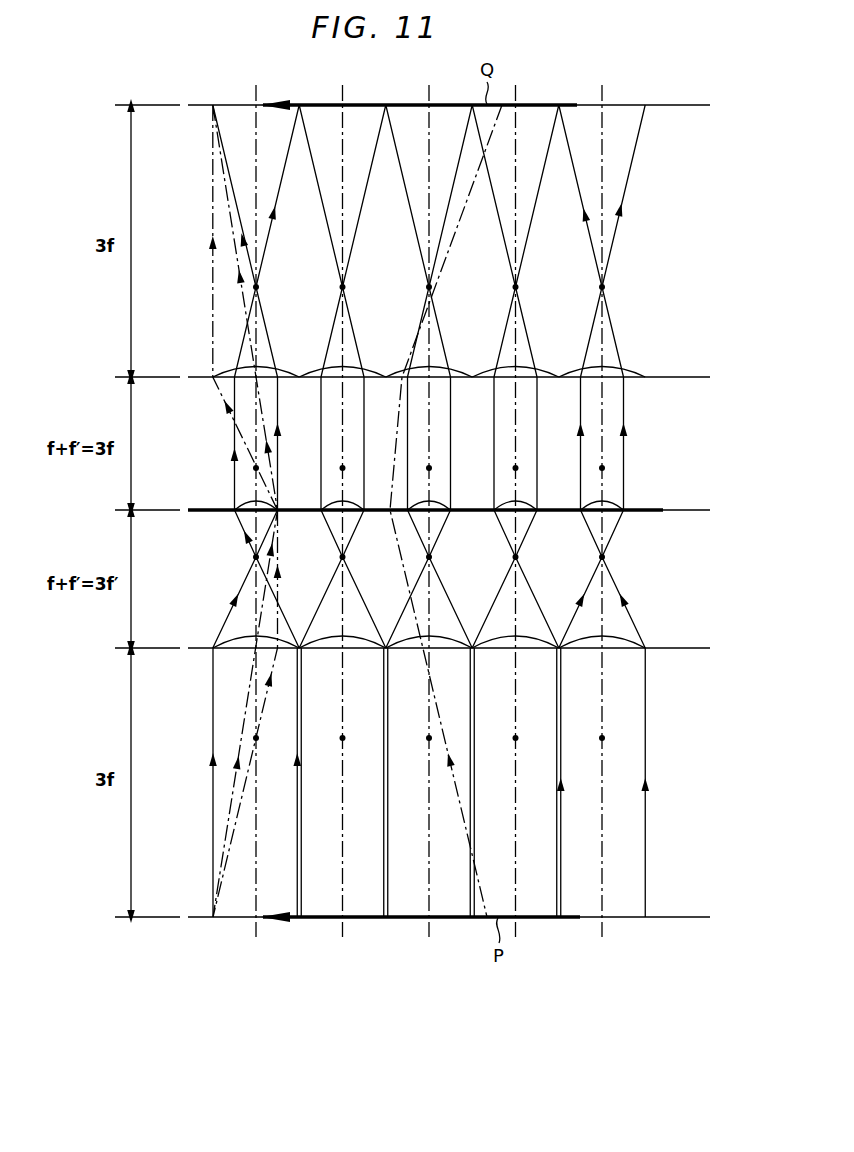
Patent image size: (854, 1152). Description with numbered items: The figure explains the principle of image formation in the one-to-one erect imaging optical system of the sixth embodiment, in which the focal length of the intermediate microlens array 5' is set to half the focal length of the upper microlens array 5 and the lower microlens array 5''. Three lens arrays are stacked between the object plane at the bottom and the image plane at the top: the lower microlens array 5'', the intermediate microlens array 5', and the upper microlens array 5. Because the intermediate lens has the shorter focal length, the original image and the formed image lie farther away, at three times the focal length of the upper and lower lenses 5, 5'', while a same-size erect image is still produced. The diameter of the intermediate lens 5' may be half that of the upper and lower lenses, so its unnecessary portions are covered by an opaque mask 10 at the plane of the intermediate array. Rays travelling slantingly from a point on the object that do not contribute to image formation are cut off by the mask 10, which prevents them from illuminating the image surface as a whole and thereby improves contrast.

The upper microlens array 5 is at (461, 357).
The intermediate microlens array 5' is at (456, 477).
The lower microlens array 5'' is at (464, 621).
The opaque mask 10 is at (655, 509).